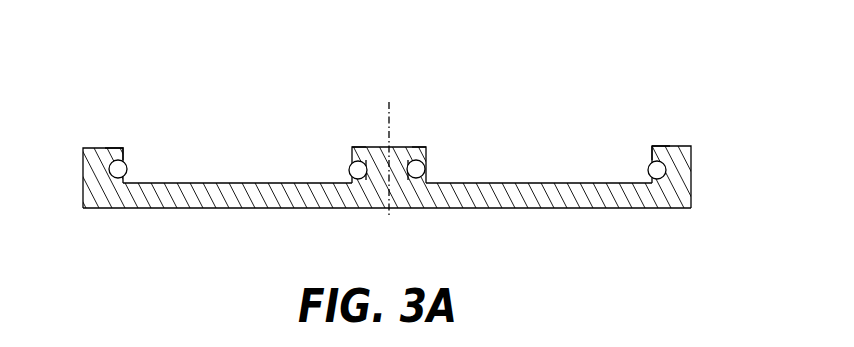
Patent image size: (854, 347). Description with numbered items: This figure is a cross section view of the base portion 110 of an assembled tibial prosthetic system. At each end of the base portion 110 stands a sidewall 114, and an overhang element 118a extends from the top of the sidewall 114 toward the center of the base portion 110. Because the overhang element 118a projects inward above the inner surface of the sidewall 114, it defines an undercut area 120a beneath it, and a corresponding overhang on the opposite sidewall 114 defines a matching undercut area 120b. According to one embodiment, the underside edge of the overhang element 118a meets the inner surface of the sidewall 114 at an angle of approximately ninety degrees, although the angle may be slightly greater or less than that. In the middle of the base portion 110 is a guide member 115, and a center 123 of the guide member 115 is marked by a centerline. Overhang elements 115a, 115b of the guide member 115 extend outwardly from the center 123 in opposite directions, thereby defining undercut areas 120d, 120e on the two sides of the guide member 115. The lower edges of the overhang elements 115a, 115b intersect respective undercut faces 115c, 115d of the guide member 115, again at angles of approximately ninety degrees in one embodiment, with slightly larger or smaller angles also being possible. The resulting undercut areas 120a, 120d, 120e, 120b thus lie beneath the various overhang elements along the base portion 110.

The base portion 110 is at (140, 88).
The sidewall 114 is at (97, 173).
The overhang element 118a is at (116, 148).
The guide member 115 is at (397, 145).
The overhang element 115a is at (355, 147).
The overhang element 115b is at (422, 145).
The undercut face 115c is at (372, 165).
The undercut face 115d is at (395, 165).
The center 123 is at (388, 113).
The undercut area 120a is at (128, 172).
The undercut area 120d is at (349, 172).
The undercut area 120e is at (426, 162).
The undercut area 120b is at (665, 178).